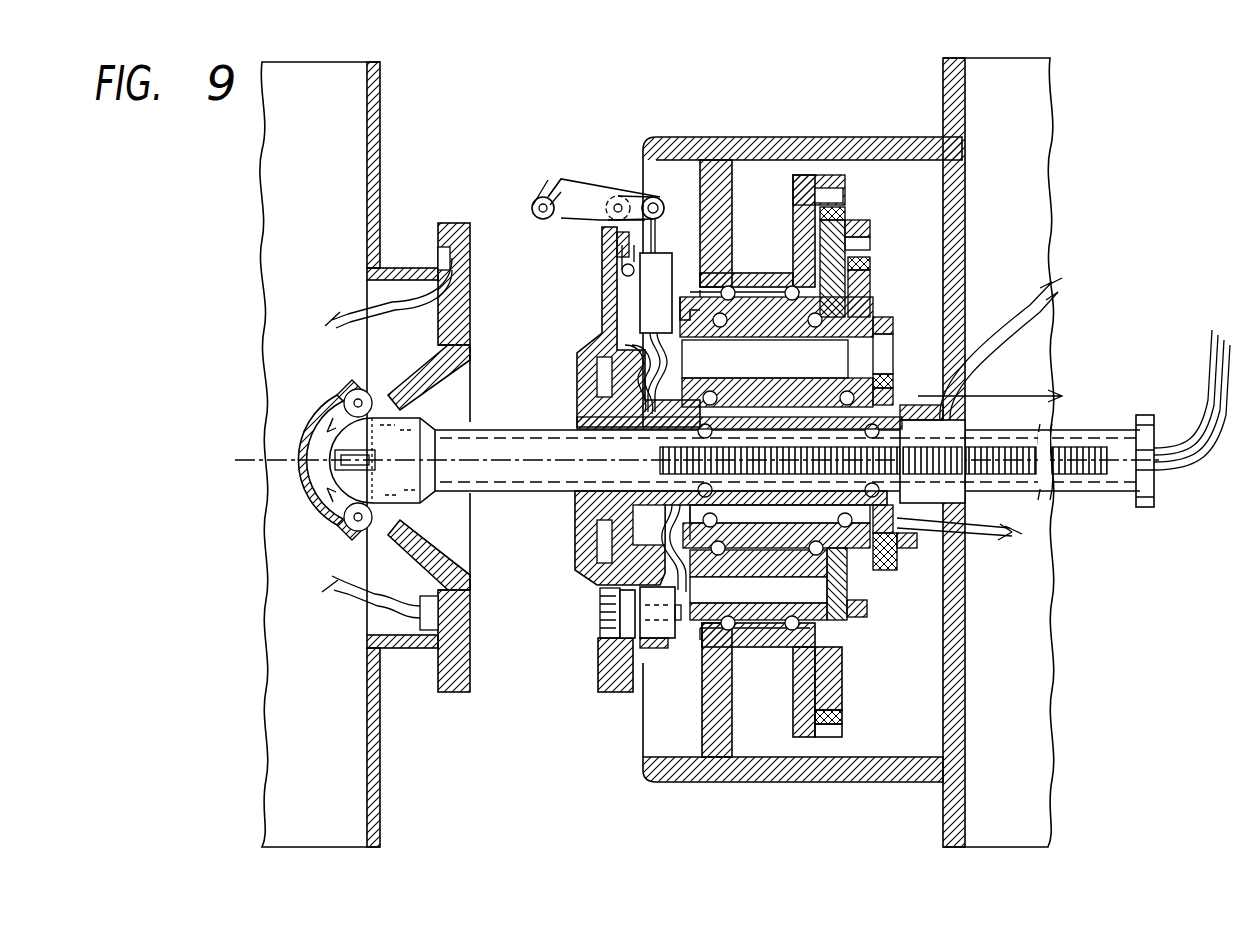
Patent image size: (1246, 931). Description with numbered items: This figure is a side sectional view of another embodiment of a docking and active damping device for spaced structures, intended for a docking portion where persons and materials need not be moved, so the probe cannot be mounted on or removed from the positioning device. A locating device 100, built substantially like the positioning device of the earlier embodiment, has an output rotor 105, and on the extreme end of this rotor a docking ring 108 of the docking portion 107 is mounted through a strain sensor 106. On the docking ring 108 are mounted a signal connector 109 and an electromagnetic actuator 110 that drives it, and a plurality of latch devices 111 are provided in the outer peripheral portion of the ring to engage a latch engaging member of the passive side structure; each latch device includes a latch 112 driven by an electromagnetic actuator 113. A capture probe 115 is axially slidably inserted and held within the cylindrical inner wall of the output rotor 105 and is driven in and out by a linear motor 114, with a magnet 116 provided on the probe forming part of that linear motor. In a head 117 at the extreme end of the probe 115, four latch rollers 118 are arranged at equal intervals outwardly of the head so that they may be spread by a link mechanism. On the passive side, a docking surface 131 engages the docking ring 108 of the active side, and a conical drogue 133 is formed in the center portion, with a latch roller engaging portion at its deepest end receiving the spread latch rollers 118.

The locating device 100 is at (852, 665).
The output rotor 105 is at (904, 560).
The strain sensor 106 is at (577, 563).
The docking portion 107 is at (602, 305).
The docking ring 108 is at (598, 672).
The signal connector 109 is at (628, 640).
The electromagnetic actuator 110 is at (650, 648).
The latch device 111 is at (561, 184).
The latch 112 is at (553, 193).
The electromagnetic actuator 113 is at (672, 270).
The linear motor 114 is at (972, 424).
The capture probe 115 is at (512, 494).
The magnet 116 is at (1100, 478).
The head 117 is at (400, 420).
The latch roller 118 is at (338, 395).
The docking surface 131 is at (472, 654).
The conical drogue 133 is at (455, 372).